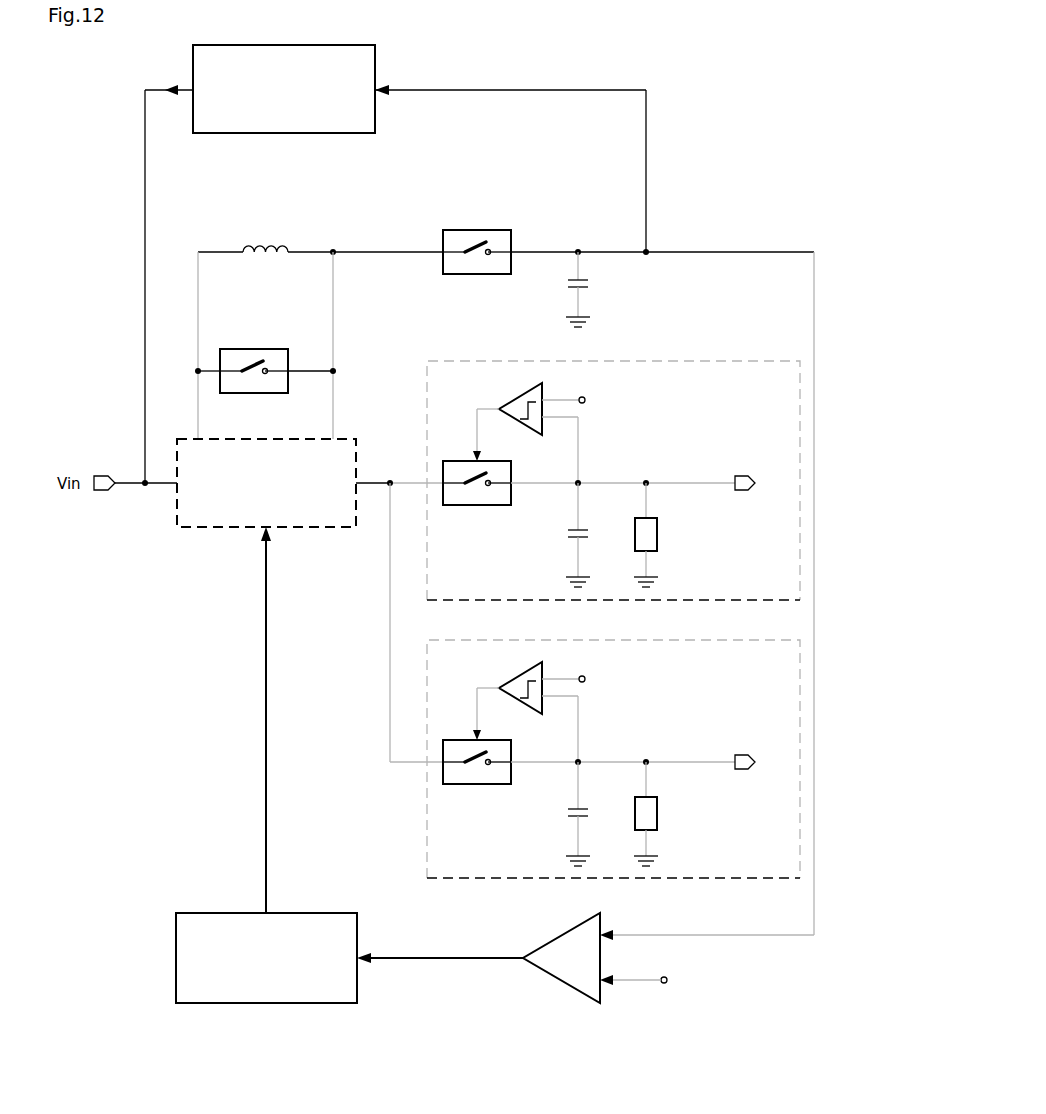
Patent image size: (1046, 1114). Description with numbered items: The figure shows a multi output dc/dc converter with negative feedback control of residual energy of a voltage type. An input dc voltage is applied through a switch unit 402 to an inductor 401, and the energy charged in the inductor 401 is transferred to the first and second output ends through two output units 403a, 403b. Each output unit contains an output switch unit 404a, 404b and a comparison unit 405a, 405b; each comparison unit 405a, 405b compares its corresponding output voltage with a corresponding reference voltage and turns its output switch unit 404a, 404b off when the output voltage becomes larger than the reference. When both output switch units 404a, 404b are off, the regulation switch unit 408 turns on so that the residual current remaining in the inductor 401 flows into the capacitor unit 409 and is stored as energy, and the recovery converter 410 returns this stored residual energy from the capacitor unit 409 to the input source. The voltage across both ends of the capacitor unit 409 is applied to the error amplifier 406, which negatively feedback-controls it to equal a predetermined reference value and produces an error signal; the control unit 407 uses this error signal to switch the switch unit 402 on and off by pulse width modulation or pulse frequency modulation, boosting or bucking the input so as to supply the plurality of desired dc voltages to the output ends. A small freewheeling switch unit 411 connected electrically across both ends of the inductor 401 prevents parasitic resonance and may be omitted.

The recovery converter 410 is at (258, 134).
The inductor 401 is at (272, 246).
The regulation switch unit 408 is at (480, 230).
The capacitor unit 409 is at (565, 283).
The freewheeling switch unit 411 is at (220, 362).
The switch unit 402 is at (200, 528).
The output unit 403a is at (620, 361).
The comparison unit 405a is at (517, 398).
The output switch unit 404a is at (476, 506).
The output unit 403b is at (800, 715).
The comparison unit 405b is at (517, 677).
The output switch unit 404b is at (476, 785).
The control unit 407 is at (200, 1004).
The error amplifier 406 is at (560, 983).